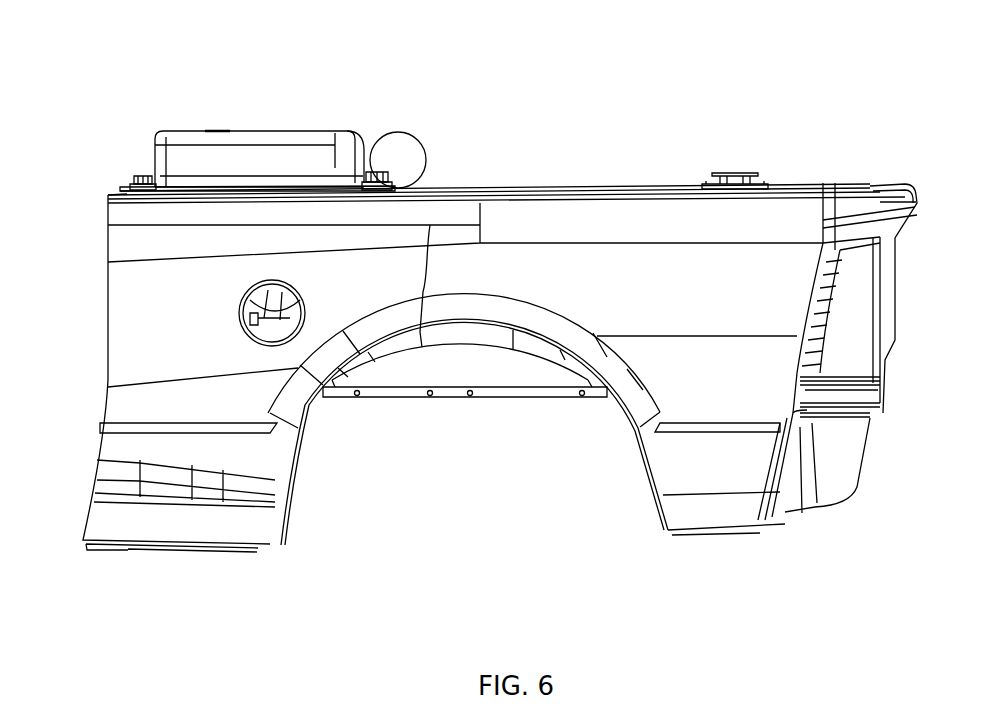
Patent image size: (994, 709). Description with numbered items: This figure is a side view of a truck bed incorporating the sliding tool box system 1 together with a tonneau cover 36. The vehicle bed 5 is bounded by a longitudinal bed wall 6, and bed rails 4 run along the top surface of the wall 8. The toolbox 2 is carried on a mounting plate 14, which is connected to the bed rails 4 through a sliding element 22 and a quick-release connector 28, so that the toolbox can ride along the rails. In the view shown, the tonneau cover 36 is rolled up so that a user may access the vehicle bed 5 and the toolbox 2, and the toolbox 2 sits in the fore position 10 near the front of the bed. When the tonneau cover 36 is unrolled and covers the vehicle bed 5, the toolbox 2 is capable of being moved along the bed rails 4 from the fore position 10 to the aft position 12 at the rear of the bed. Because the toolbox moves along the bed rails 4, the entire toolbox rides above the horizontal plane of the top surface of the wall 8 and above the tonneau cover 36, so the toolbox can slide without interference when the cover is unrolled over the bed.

The fore position 10 is at (66, 84).
The sliding tool box system 1 is at (307, 120).
The toolbox 2 is at (262, 148).
The mounting plate 14 is at (246, 188).
The tonneau cover 36 is at (398, 148).
The sliding element 22 is at (133, 193).
The quick-release connector 28 is at (142, 178).
The bed rails 4 is at (120, 195).
The top surface of the wall 8 is at (108, 206).
The longitudinal bed wall 6 is at (511, 234).
The vehicle bed 5 is at (56, 356).
The aft position 12 is at (904, 119).